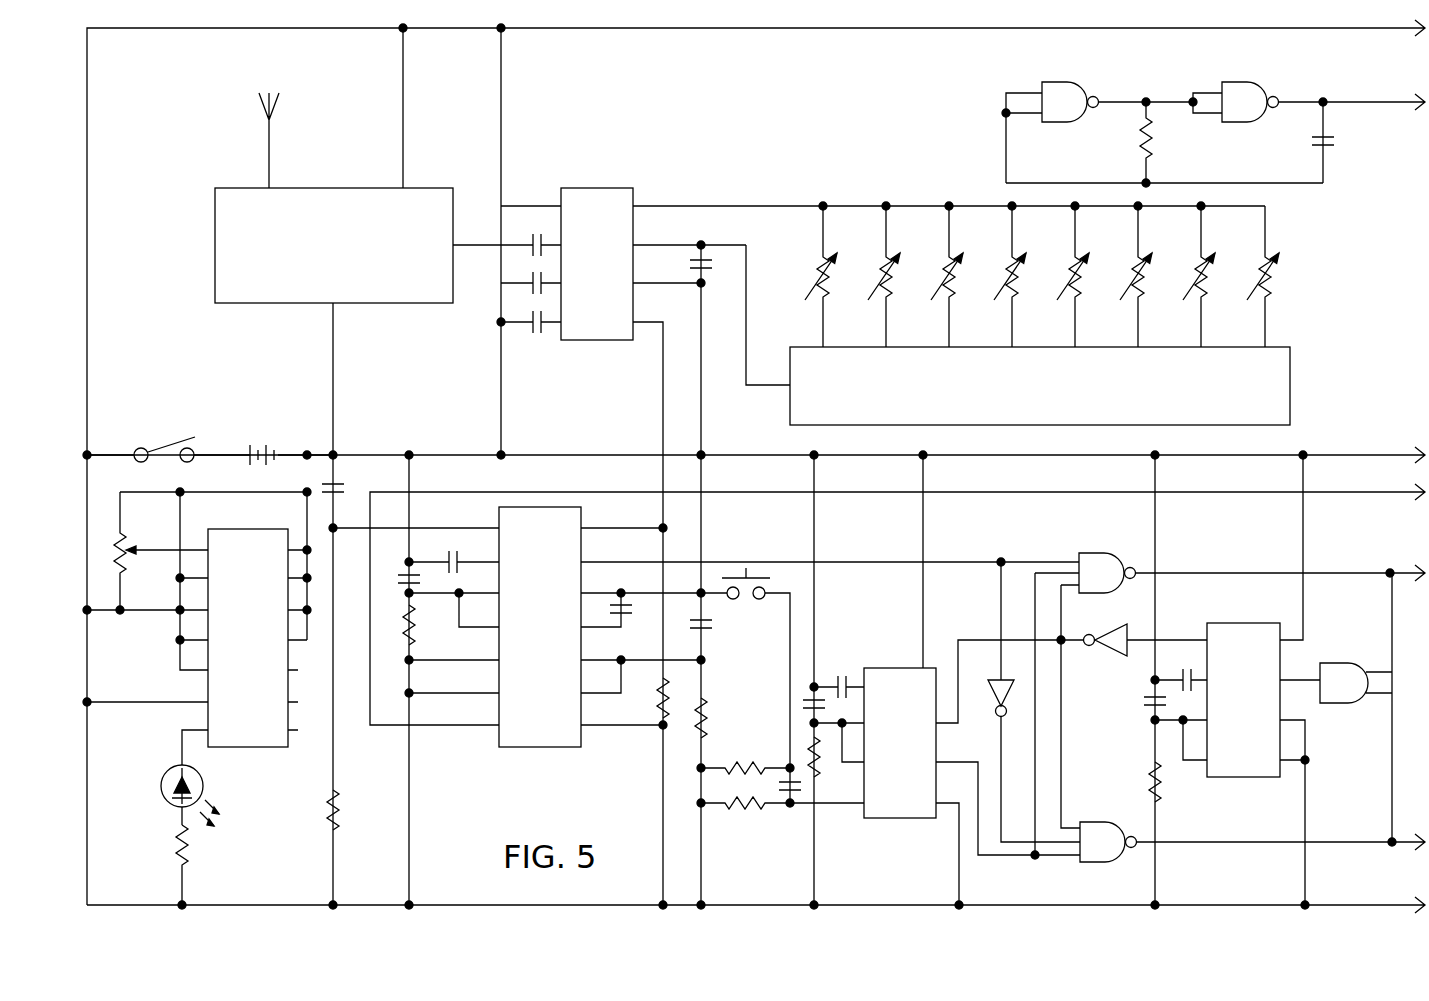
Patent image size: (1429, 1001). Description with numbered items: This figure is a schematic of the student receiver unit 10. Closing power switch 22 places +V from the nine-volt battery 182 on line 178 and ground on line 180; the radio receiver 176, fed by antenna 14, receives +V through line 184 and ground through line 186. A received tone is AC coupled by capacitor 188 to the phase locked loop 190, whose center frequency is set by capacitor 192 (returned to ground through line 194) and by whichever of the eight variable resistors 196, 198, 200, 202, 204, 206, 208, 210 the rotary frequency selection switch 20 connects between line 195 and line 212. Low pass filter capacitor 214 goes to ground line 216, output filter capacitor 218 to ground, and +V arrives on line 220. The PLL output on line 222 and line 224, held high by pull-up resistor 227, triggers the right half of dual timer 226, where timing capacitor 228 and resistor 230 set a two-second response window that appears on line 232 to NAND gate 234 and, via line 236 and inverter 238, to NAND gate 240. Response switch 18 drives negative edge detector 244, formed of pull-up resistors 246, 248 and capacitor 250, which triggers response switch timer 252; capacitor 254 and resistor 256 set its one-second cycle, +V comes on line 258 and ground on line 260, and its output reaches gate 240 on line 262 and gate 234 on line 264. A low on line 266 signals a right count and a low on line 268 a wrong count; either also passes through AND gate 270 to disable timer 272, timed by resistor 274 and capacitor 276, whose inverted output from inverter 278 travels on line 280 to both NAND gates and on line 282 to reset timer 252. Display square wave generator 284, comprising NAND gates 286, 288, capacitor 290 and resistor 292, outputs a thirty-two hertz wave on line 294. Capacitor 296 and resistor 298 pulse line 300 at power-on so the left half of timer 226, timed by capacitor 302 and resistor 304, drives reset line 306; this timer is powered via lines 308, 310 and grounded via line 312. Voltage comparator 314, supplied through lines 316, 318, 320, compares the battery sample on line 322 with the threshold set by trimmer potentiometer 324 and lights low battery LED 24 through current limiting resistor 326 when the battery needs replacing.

The student receiver unit 10 is at (170, 98).
The telescopic antenna 14 is at (268, 156).
The response switch 18 is at (766, 567).
The frequency selection switch 20 is at (1291, 382).
The power switch 22 is at (168, 443).
The low battery LED 24 is at (168, 764).
The radio receiver 176 is at (215, 238).
The +V line 178 is at (87, 342).
The ground line 180 is at (453, 454).
The battery 182 is at (269, 426).
The +V line 184 is at (402, 92).
The ground line 186 is at (333, 342).
The capacitor 188 is at (531, 242).
The phase locked loop 190 is at (582, 188).
The capacitor 192 is at (692, 262).
The ground line 194 is at (703, 404).
The line 195 is at (751, 296).
The variable resistor 196 is at (826, 296).
The variable resistor 198 is at (889, 296).
The variable resistor 200 is at (952, 296).
The variable resistor 202 is at (1015, 296).
The variable resistor 204 is at (1078, 296).
The variable resistor 206 is at (1141, 296).
The variable resistor 208 is at (1204, 296).
The variable resistor 210 is at (1268, 296).
The line 212 is at (736, 204).
The low pass filter capacitor 214 is at (520, 345).
The ground line 216 is at (505, 397).
The output filter capacitor 218 is at (531, 280).
The +V line 220 is at (507, 70).
The PLL output line 222 is at (663, 404).
The line 224 is at (650, 527).
The dual timer 226 is at (538, 748).
The pull-up resistor 227 is at (660, 704).
The timing capacitor 228 is at (708, 630).
The resistor 230 is at (708, 714).
The line 232 is at (900, 562).
The NAND gate 234 is at (1118, 553).
The line 236 is at (1010, 592).
The inverter 238 is at (998, 712).
The NAND gate 240 is at (1126, 822).
The negative edge detector 244 is at (785, 825).
The pull-up resistor 246 is at (772, 756).
The pull-up resistor 248 is at (770, 814).
The capacitor 250 is at (776, 790).
The response switch timer 252 is at (917, 818).
The timing capacitor 254 is at (812, 690).
The resistor 256 is at (824, 777).
The +V line 258 is at (959, 858).
The ground line 260 is at (923, 614).
The line 262 is at (998, 866).
The line 264 is at (1049, 745).
The line 266 is at (1392, 571).
The line 268 is at (1387, 841).
The AND gate 270 is at (1368, 659).
The disable timer 272 is at (1242, 622).
The timing resistor 274 is at (1164, 786).
The capacitor 276 is at (1150, 708).
The inverter 278 is at (1122, 628).
The line 280 is at (1070, 664).
The line 282 is at (1000, 640).
The display square wave generator 284 is at (996, 61).
The NAND gate 286 is at (1062, 82).
The NAND gate 288 is at (1252, 82).
The timing capacitor 290 is at (1315, 146).
The resistor 292 is at (1140, 144).
The line 294 is at (1384, 98).
The capacitor 296 is at (338, 478).
The resistor 298 is at (329, 820).
The line 300 is at (475, 527).
The timing capacitor 302 is at (408, 562).
The resistor 304 is at (420, 630).
The reset line 306 is at (394, 727).
The +V line 308 is at (414, 793).
The +V line 310 is at (474, 687).
The ground line 312 is at (600, 592).
The voltage comparator 314 is at (248, 749).
The +V line 316 is at (164, 698).
The ground line 318 is at (306, 530).
The ground line 320 is at (221, 487).
The line 322 is at (160, 619).
The trimmer potentiometer 324 is at (165, 522).
The current limiting resistor 326 is at (191, 852).